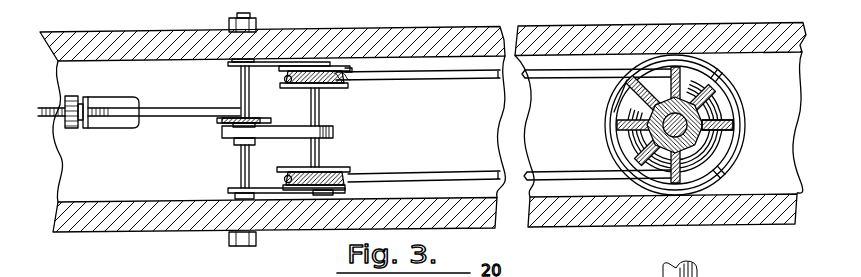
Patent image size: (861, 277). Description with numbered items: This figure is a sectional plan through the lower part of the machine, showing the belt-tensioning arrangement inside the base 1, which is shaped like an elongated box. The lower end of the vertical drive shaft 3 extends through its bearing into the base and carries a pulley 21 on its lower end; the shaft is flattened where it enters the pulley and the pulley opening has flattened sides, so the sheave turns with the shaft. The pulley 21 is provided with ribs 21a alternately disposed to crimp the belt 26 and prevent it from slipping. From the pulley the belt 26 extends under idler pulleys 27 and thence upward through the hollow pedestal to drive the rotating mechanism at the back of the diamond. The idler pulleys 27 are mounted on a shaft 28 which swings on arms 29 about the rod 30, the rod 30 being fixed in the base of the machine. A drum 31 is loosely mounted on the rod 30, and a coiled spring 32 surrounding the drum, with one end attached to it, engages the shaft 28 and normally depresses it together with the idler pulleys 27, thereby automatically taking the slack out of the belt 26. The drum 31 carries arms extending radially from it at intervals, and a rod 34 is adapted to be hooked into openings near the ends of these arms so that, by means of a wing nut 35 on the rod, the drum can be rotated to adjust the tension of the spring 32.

The base 1 is at (173, 231).
The drive shaft 3 is at (716, 112).
The pulley 21 is at (617, 104).
The ribs 21a is at (736, 123).
The belt 26 is at (481, 80).
The idler pulleys 27 is at (336, 85).
The shaft 28 is at (320, 113).
The arms 29 is at (258, 67).
The rod 30 is at (241, 167).
The drum 31 is at (235, 142).
The coiled spring 32 is at (283, 134).
The rod 34 is at (156, 109).
The wing nut 35 is at (77, 98).